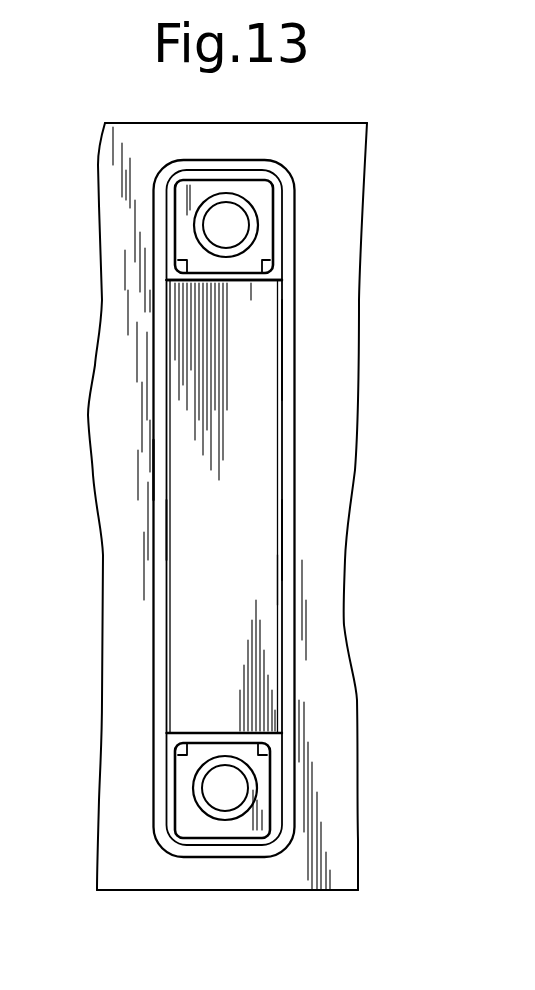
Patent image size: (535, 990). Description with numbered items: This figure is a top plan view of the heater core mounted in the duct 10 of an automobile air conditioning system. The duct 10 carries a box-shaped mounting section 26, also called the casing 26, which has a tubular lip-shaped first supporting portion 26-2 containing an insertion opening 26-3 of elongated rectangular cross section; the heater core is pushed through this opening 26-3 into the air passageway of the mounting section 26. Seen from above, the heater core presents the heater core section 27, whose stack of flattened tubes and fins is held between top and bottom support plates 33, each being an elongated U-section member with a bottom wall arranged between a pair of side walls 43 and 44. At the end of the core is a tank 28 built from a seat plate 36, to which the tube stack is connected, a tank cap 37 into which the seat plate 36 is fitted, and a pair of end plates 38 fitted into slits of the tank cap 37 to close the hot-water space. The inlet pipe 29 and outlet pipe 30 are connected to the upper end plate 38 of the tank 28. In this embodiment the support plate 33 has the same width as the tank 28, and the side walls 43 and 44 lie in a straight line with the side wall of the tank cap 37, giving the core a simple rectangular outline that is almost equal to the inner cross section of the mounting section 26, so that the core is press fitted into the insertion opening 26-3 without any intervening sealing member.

The duct 10 is at (130, 863).
The mounting section 26 is at (302, 808).
The first supporting portion 26-2 is at (288, 352).
The insertion opening 26-3 is at (275, 543).
The heater core section 27 is at (146, 467).
The tank 28 is at (223, 158).
The inlet pipe 29 is at (250, 203).
The outlet pipe 30 is at (207, 820).
The support plate 33 is at (258, 405).
The seat plate 36 is at (222, 281).
The tank cap 37 is at (172, 212).
The end plate 38 is at (180, 243).
The side wall 43 is at (278, 577).
The side wall 44 is at (167, 530).